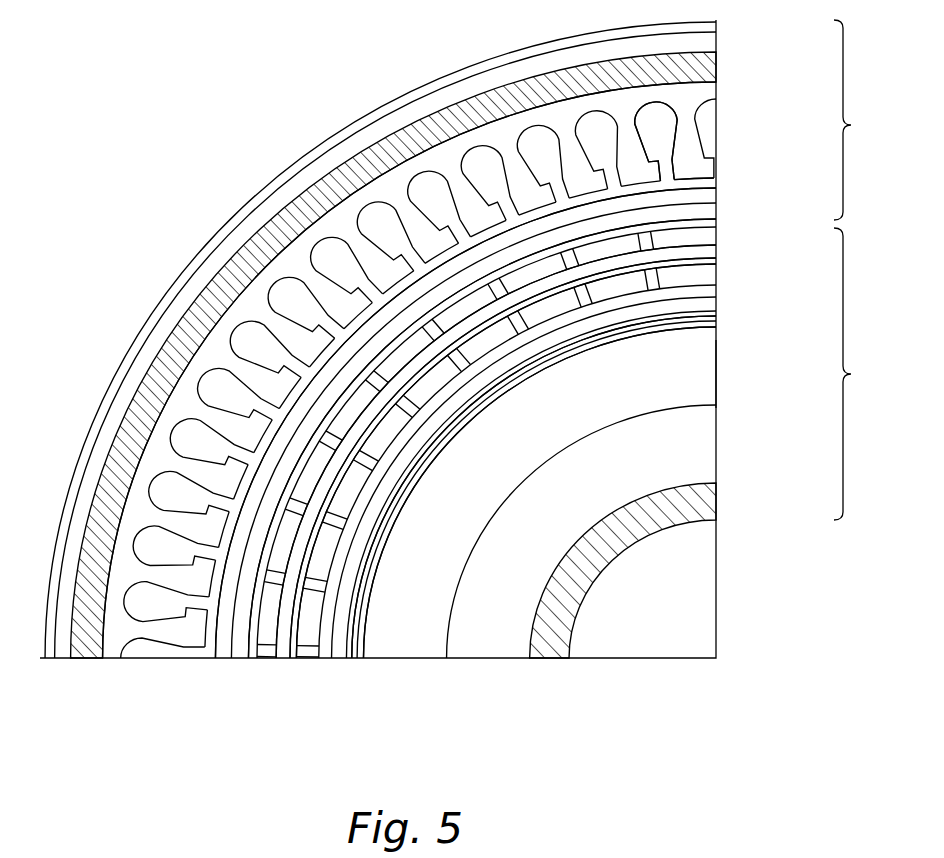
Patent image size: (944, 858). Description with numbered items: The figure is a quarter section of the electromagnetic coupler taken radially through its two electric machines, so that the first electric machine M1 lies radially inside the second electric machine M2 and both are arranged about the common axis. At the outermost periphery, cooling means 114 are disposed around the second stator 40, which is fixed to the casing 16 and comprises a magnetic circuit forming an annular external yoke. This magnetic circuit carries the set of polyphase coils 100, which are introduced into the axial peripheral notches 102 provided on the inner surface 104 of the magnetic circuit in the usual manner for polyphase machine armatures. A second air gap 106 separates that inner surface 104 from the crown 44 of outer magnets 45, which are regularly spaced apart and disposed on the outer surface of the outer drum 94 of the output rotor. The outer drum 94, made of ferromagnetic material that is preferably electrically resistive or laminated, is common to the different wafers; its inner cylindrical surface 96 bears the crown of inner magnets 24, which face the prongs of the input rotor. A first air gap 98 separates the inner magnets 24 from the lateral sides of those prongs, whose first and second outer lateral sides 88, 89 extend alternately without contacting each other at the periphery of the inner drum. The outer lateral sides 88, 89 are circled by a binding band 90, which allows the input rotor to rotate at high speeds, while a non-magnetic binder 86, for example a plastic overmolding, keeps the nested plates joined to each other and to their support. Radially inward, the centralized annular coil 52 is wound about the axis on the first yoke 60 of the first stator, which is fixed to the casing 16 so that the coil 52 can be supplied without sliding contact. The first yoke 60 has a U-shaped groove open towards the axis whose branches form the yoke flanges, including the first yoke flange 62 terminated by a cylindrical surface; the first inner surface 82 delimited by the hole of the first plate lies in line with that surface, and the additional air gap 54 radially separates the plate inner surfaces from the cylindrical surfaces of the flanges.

The cooling means 114 is at (703, 44).
The casing 16 is at (710, 493).
The second stator 40 is at (707, 91).
The polyphase coils 100 is at (707, 133).
The axial peripheral notches 102 is at (703, 150).
The inner surface 104 is at (690, 172).
The second air gap 106 is at (705, 177).
The crown of outer magnets 44 is at (722, 205).
The outer drum 94 is at (712, 216).
The inner magnets 24 is at (722, 241).
The binding band 90 is at (712, 257).
The non-magnetic binder 86 is at (710, 298).
The additional air gap 54 is at (710, 323).
The centralized annular coil 52 is at (706, 377).
The first yoke 60 is at (706, 437).
The outer magnets 45 is at (225, 658).
The first air gap 98 is at (277, 658).
The inner cylindrical surface 96 is at (250, 658).
The first outer lateral side 88 is at (290, 658).
The second outer lateral side 89 is at (304, 658).
The first inner surface 82 is at (355, 658).
The first yoke flange 62 is at (367, 628).
The first electric machine M1 is at (861, 374).
The second electric machine M2 is at (861, 120).